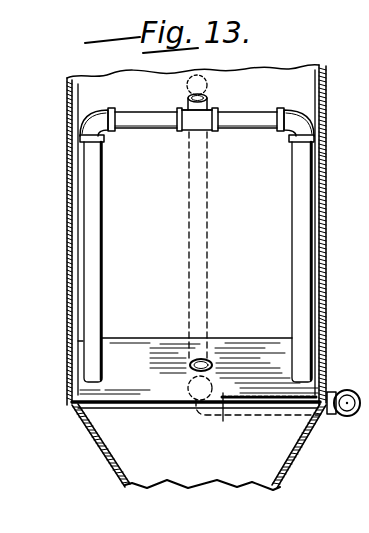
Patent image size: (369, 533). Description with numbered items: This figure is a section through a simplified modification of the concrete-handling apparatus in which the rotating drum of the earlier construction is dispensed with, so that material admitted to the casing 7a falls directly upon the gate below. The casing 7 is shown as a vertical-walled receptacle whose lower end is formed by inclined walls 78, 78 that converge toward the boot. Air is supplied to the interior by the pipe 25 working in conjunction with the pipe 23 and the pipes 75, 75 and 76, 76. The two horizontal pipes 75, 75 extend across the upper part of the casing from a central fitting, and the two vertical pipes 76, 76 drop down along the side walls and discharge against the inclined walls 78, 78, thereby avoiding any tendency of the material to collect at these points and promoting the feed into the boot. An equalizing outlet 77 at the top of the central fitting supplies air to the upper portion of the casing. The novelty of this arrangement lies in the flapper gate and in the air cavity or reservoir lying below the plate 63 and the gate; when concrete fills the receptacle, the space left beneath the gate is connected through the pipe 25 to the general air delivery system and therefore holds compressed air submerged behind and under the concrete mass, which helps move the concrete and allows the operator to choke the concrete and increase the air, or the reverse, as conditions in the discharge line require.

The casing 7 is at (348, 382).
The casing 7a is at (67, 249).
The pipe 23 is at (188, 235).
The pipe 25 is at (197, 409).
The plate 63 is at (151, 352).
The pipes 75 is at (155, 125).
The pipes 76 is at (102, 262).
The equalizing outlet 77 is at (205, 93).
The inclined walls 78 is at (82, 426).